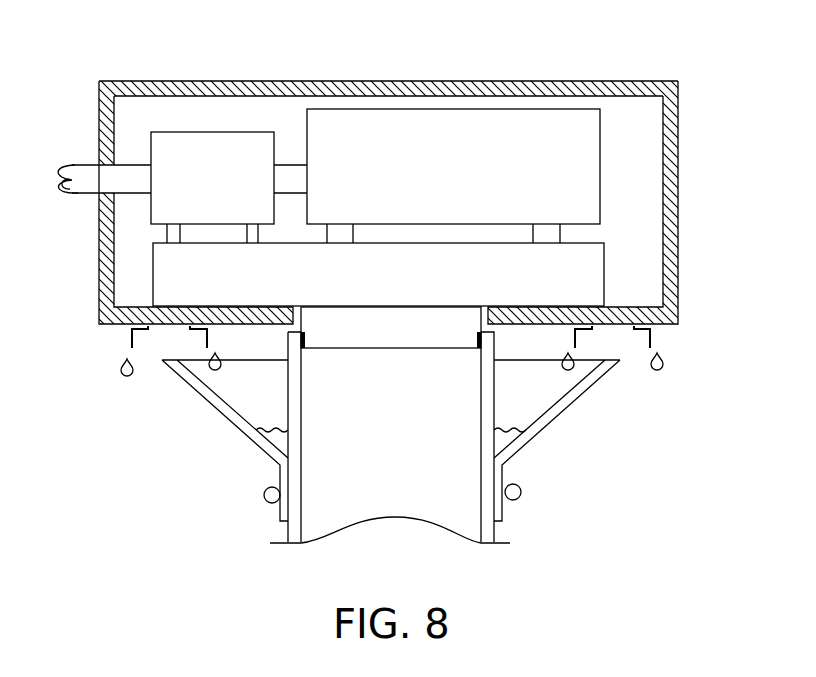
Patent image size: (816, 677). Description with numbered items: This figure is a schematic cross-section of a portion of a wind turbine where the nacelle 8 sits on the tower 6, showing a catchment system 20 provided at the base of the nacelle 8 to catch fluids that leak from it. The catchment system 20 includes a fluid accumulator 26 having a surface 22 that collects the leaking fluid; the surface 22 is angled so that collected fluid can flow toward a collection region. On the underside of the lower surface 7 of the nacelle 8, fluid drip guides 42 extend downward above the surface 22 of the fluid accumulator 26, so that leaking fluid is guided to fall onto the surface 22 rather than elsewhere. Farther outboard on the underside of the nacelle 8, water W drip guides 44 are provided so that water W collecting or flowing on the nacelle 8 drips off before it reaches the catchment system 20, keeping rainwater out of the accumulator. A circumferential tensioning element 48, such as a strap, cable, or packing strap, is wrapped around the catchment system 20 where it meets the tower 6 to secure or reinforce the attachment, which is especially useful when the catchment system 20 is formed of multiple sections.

The tower 6 is at (497, 532).
The lower surface 7 is at (678, 297).
The nacelle 8 is at (624, 81).
The catchment system 20 is at (392, 440).
The surface 22 is at (549, 412).
The fluid accumulator 26 is at (193, 392).
The fluid drip guides 42 is at (210, 344).
The water drip guides 44 is at (139, 340).
The circumferential tensioning element 48 is at (264, 495).
The water W is at (111, 369).